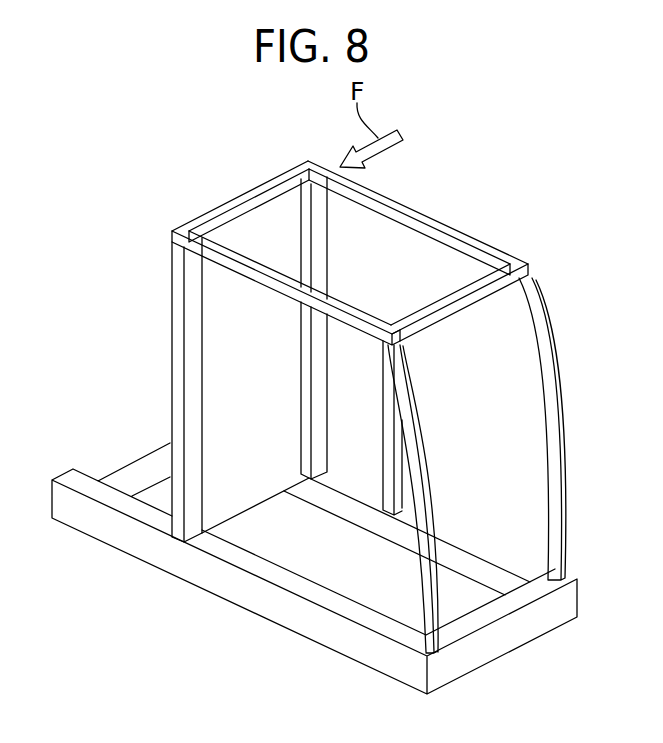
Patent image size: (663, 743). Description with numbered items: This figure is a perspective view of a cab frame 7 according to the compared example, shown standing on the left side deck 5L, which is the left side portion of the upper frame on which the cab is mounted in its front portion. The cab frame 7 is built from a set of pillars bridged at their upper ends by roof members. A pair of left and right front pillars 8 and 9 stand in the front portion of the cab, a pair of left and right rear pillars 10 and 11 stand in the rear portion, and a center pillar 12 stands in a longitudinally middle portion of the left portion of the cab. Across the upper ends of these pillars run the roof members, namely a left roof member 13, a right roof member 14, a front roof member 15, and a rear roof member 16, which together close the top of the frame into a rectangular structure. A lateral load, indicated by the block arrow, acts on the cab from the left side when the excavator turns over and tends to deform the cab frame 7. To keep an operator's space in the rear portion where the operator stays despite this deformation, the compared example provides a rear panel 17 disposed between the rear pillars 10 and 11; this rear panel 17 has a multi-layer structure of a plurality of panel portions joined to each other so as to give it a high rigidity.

The left side deck 5L is at (242, 606).
The cab frame 7 is at (483, 233).
The front pillar 8 is at (545, 423).
The front pillar 9 is at (418, 592).
The rear pillar 10 is at (330, 360).
The rear pillar 11 is at (170, 424).
The center pillar 12 is at (383, 419).
The left roof member 13 is at (410, 212).
The right roof member 14 is at (277, 273).
The front roof member 15 is at (463, 293).
The rear roof member 16 is at (248, 202).
The rear panel 17 is at (258, 481).